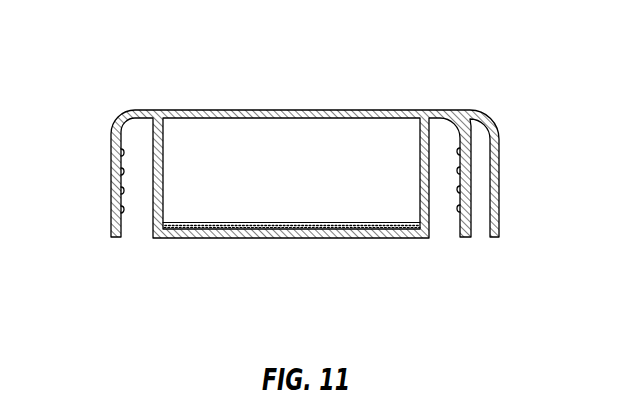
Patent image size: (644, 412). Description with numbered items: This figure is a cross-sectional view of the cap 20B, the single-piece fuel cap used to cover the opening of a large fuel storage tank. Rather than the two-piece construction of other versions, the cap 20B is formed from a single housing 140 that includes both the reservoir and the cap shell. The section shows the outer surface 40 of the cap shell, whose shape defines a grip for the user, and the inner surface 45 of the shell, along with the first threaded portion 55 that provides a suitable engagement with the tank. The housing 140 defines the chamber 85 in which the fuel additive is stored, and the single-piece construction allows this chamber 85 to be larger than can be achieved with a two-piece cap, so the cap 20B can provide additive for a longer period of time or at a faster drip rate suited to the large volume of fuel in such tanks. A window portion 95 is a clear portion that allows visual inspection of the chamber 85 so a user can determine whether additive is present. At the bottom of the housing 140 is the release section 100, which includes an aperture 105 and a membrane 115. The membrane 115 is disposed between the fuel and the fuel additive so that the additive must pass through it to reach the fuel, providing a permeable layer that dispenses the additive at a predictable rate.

The cap 20B is at (118, 66).
The outer surface 40 is at (500, 222).
The housing 140 is at (500, 170).
The chamber 85 is at (231, 128).
The window portion 95 is at (300, 111).
The first threaded portion 55 is at (123, 222).
The inner surface 45 is at (461, 230).
The release section 100 is at (240, 248).
The aperture 105 is at (291, 238).
The membrane 115 is at (197, 221).